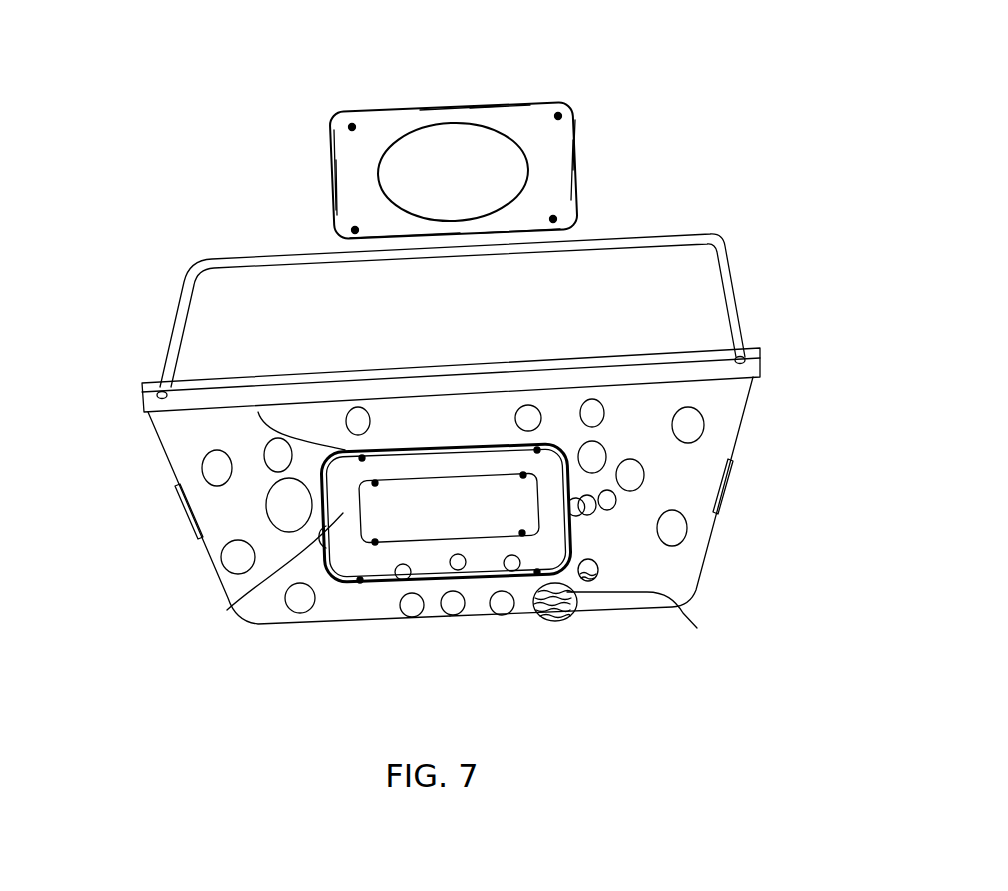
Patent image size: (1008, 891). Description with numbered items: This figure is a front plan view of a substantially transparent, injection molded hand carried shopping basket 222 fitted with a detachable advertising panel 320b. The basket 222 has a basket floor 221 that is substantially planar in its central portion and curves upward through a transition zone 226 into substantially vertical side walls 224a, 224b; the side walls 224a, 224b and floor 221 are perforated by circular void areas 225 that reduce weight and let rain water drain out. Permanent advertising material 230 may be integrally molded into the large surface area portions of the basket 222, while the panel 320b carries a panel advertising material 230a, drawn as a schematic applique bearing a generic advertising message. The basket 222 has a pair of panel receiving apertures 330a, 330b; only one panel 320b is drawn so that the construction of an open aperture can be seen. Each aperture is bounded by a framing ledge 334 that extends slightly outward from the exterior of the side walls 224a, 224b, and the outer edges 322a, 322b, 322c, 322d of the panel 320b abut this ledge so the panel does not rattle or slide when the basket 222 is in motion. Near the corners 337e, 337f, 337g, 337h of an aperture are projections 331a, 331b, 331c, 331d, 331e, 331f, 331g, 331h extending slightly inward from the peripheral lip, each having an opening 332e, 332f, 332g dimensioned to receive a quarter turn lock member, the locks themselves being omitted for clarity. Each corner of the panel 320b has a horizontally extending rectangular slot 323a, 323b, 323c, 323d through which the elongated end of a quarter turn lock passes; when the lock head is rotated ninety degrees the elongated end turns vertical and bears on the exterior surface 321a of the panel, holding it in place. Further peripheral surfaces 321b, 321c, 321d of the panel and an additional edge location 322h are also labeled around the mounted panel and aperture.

The basket floor 221 is at (577, 615).
The hand basket 222 is at (757, 290).
The side wall 224a is at (250, 600).
The side wall 224b is at (657, 557).
The void areas 225 is at (203, 460).
The transition zone 226 is at (690, 598).
The permanent advertising material 230 is at (183, 530).
The panel advertising material 230a is at (430, 128).
The substantially transparent detachable advertising panel 320b is at (562, 193).
The exterior surface of the panel 321a is at (337, 190).
The bottom edge of card 321b is at (384, 236).
The top edge of card 321c is at (488, 99).
The right edge of card 321d is at (570, 153).
The outer edge of the panel 322a is at (332, 168).
The outer edge of the panel 322b is at (537, 235).
The outer edge of the panel 322c is at (460, 106).
The outer edge of the panel 322d is at (577, 133).
The side portion 322h is at (520, 536).
The rectangular slot 323a is at (352, 124).
The rectangular slot 323b is at (352, 230).
The rectangular slot 323c is at (558, 113).
The rectangular slot 323d is at (556, 219).
The panel receiving aperture 330a is at (432, 460).
The panel receiving aperture 330b is at (262, 622).
The projection 331a is at (258, 412).
The projection 331b is at (360, 582).
The projection 331c is at (570, 447).
The projection 331d is at (537, 575).
The projection 331e is at (388, 458).
The projection 331f is at (380, 563).
The projection 331g is at (495, 450).
The projection 331h is at (480, 565).
The opening 332e is at (375, 481).
The opening 332f is at (376, 545).
The opening 332g is at (533, 457).
The framing ledge 334 is at (645, 620).
The corner 337e is at (375, 487).
The corner 337f is at (376, 540).
The corner 337g is at (524, 480).
The corner 337h is at (521, 531).